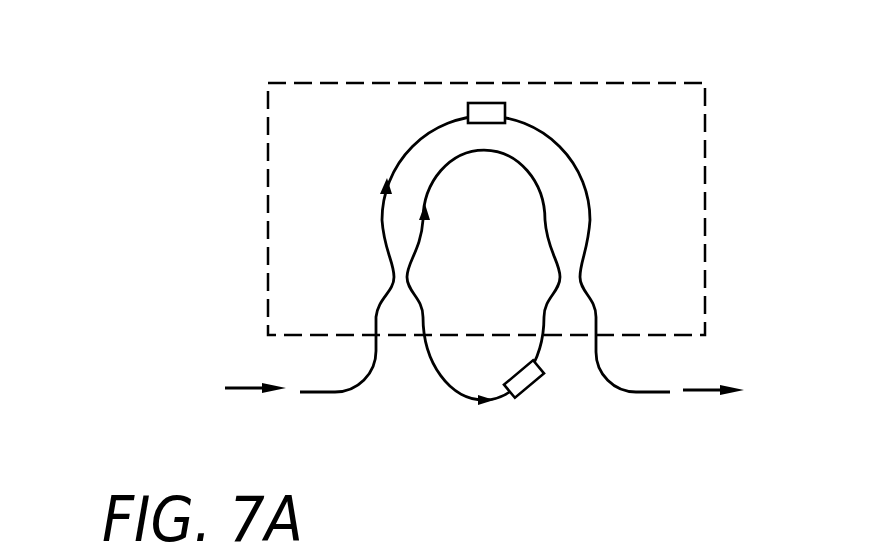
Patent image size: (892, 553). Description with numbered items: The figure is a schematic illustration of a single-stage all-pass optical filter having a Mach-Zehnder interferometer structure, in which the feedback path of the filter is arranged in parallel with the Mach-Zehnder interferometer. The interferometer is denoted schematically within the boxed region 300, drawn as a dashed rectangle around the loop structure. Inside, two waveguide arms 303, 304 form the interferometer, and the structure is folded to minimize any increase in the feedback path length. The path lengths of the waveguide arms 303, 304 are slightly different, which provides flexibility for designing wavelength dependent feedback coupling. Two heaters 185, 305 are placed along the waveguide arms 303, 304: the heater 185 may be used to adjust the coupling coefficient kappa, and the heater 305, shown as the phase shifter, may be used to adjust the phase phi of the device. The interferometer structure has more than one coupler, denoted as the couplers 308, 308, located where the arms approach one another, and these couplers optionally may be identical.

The boxed region 300 is at (268, 130).
The waveguide arm 303 is at (447, 113).
The waveguide arm 304 is at (438, 173).
The heater 185 is at (505, 103).
The coupler 308 is at (352, 266).
The heater 305 is at (533, 392).